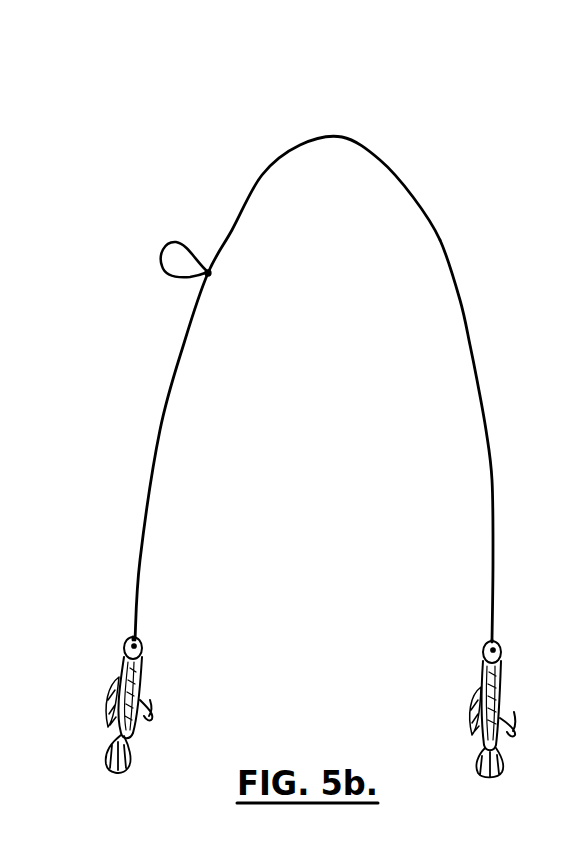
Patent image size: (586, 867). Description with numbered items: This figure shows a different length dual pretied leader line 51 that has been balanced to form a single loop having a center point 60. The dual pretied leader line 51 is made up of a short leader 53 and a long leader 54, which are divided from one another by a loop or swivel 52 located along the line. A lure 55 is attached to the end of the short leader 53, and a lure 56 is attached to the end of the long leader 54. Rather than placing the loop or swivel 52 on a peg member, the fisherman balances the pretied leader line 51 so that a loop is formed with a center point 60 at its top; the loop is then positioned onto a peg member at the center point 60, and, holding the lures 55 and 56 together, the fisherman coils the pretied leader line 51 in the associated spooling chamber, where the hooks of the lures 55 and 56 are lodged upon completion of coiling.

The dual pretied leader line 51 is at (443, 86).
The loop or swivel 52 is at (174, 242).
The short leader 53 is at (160, 432).
The long leader 54 is at (458, 287).
The lure 55 is at (138, 676).
The lure 56 is at (504, 681).
The center point 60 is at (332, 130).